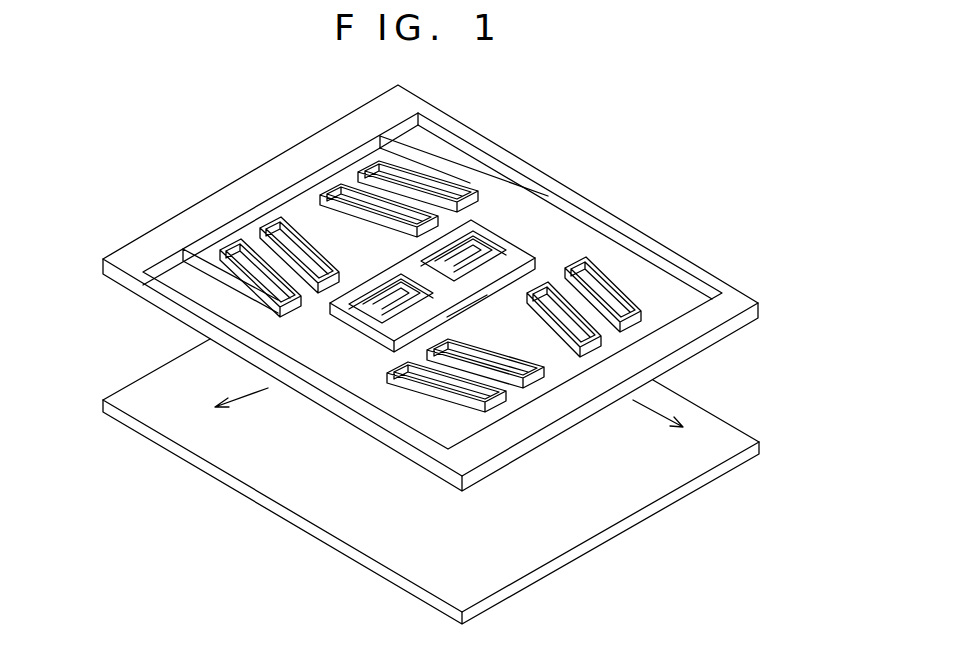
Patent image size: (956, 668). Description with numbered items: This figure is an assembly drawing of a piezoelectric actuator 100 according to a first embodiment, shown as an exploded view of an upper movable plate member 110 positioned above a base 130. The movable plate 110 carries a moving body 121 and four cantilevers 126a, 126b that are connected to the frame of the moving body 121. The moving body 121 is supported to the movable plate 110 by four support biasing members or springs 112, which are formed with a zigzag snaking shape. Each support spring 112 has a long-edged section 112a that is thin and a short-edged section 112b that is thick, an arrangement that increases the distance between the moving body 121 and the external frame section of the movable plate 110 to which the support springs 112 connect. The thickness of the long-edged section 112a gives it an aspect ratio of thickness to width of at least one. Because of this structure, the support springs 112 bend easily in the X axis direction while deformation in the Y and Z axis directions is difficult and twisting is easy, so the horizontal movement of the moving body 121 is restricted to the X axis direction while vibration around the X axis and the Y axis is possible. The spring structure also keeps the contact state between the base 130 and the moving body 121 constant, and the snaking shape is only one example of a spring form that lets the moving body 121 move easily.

The piezoelectric actuator 100 is at (121, 145).
The movable plate member 110 is at (760, 306).
The support biasing members or springs 112 is at (339, 184).
The long-edged section 112a is at (208, 275).
The short-edged section 112b is at (235, 243).
The moving body 121 is at (481, 237).
The cantilever 126a is at (500, 262).
The cantilever 126b is at (380, 318).
The base 130 is at (760, 445).